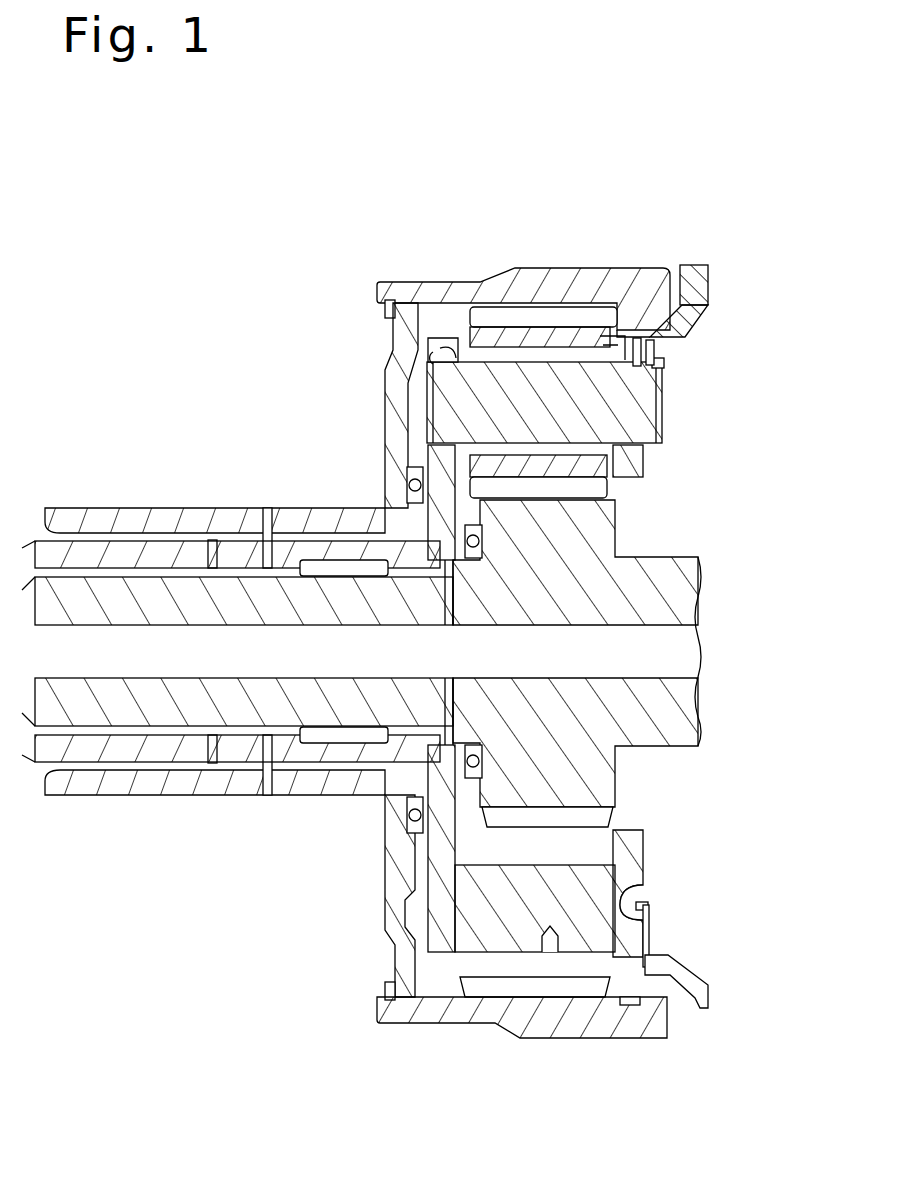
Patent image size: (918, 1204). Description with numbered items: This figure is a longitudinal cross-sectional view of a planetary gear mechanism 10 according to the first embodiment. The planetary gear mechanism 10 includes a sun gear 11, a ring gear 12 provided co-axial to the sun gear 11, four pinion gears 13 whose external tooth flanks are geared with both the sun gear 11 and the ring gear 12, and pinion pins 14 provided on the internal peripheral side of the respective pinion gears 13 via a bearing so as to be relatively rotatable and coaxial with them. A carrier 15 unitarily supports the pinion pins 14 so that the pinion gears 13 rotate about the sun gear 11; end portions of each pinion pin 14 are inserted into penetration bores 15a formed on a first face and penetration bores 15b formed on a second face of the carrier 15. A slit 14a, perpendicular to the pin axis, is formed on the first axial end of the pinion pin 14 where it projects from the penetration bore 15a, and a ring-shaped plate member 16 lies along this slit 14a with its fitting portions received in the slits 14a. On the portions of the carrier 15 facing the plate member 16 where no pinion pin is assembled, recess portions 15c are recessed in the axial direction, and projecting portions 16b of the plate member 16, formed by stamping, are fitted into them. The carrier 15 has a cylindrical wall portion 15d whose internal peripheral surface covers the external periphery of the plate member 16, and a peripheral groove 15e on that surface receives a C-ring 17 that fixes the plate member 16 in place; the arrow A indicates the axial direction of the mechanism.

The planetary gear mechanism 10 is at (235, 352).
The sun gear 11 is at (598, 783).
The ring gear 12 is at (482, 295).
The pinion gear 13 is at (537, 337).
The pinion pin 14 is at (456, 400).
The slit 14a is at (665, 386).
The carrier 15 is at (448, 958).
The penetration bore 15a is at (643, 443).
The penetration bore 15b is at (428, 350).
The recess portion 15c is at (633, 898).
The cylindrical wall portion 15d is at (673, 328).
The groove 15e is at (692, 302).
The plate member 16 is at (650, 936).
The projecting portion 16b is at (646, 906).
The C-ring 17 is at (667, 962).
The axial direction A is at (708, 656).